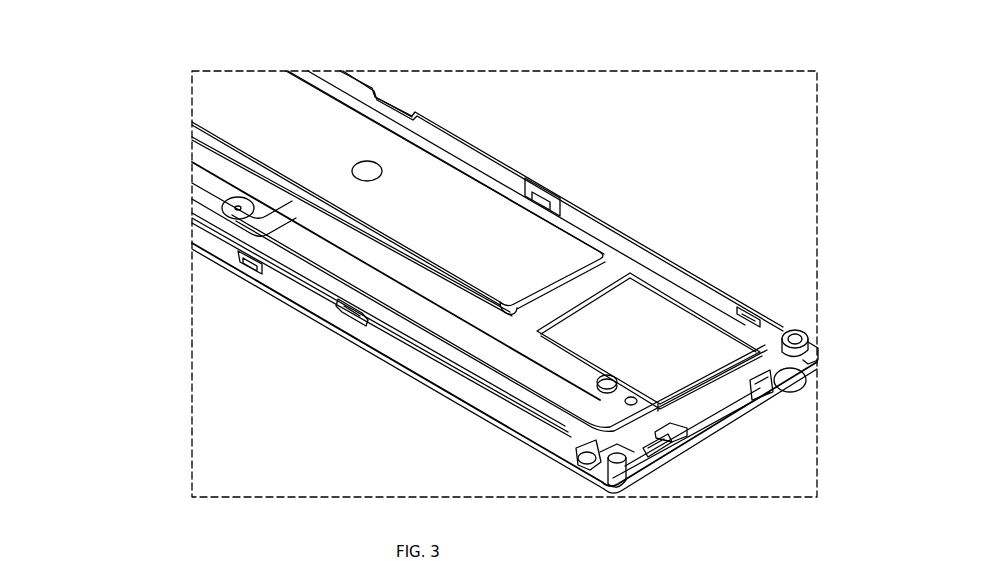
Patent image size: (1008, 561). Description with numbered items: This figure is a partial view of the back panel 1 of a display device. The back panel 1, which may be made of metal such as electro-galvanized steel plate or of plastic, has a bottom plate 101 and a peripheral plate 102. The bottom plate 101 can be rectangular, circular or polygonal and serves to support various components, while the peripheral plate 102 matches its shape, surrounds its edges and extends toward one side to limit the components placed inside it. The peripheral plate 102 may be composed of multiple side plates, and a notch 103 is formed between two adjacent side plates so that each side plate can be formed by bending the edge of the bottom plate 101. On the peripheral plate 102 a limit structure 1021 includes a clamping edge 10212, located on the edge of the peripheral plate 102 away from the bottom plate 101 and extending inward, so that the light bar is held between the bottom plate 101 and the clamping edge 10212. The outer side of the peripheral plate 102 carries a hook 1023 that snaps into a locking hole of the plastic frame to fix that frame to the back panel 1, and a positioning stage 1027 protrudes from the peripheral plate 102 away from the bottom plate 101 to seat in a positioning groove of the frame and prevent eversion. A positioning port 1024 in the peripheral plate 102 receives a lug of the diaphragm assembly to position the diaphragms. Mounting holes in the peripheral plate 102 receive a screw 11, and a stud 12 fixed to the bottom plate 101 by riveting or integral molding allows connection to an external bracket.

The back panel 1 is at (738, 48).
The bottom plate 101 is at (665, 290).
The peripheral plate 102 is at (632, 228).
The positioning port 1024 is at (408, 108).
The positioning stage 1027 is at (790, 327).
The hook 1023 is at (243, 268).
The limit structure 1021 is at (504, 338).
The clamping edge 10212 is at (353, 312).
The notch 103 is at (810, 347).
The screw 11 is at (582, 460).
The stud 12 is at (800, 388).